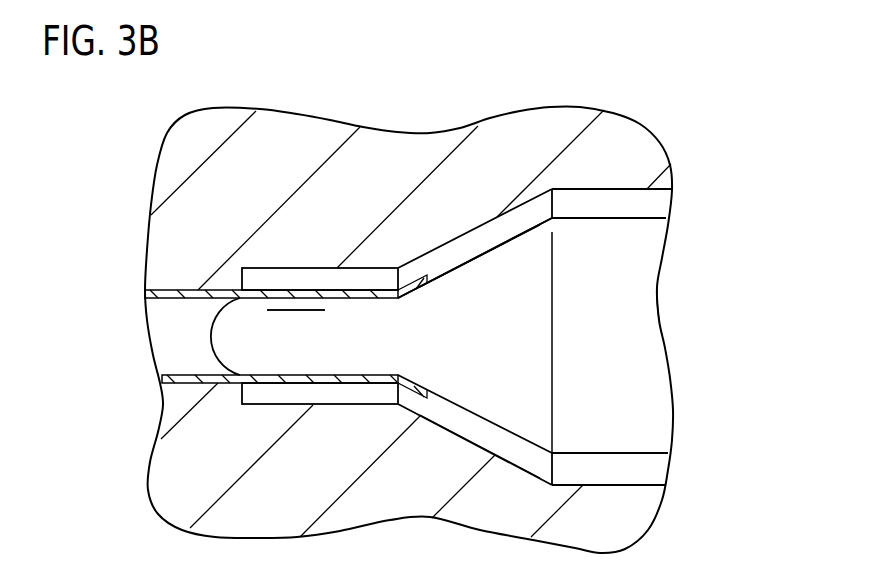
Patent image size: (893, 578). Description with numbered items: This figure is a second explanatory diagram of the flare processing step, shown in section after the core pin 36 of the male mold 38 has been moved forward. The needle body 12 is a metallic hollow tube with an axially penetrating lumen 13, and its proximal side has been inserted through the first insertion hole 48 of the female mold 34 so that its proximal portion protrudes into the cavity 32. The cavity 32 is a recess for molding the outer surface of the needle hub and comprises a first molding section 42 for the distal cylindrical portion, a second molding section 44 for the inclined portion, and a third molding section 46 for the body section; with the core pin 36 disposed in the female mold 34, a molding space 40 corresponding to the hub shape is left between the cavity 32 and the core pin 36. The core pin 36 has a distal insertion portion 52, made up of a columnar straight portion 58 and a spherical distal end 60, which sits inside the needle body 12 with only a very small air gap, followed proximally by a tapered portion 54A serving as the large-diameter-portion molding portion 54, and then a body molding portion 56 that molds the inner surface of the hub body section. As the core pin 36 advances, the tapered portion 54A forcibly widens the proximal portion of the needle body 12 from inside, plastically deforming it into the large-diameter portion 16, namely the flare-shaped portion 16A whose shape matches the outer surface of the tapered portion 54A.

The needle body 12 is at (237, 378).
The lumen 13 is at (173, 310).
The large-diameter portion 16 is at (413, 386).
The flare-shaped portion 16A is at (480, 446).
The cavity 32 is at (637, 68).
The female mold 34 is at (148, 175).
The core pin 36 is at (667, 290).
The male mold 38 is at (658, 303).
The molding space 40 is at (612, 467).
The first molding section 42 is at (266, 270).
The second molding section 44 is at (442, 245).
The third molding section 46 is at (591, 190).
The first insertion hole 48 is at (182, 377).
The distal insertion portion 52 is at (343, 353).
The large-diameter-portion molding portion 54 is at (510, 263).
The tapered portion 54A is at (480, 256).
The body molding portion 56 is at (655, 420).
The straight portion 58 is at (338, 320).
The spherical distal end 60 is at (212, 337).